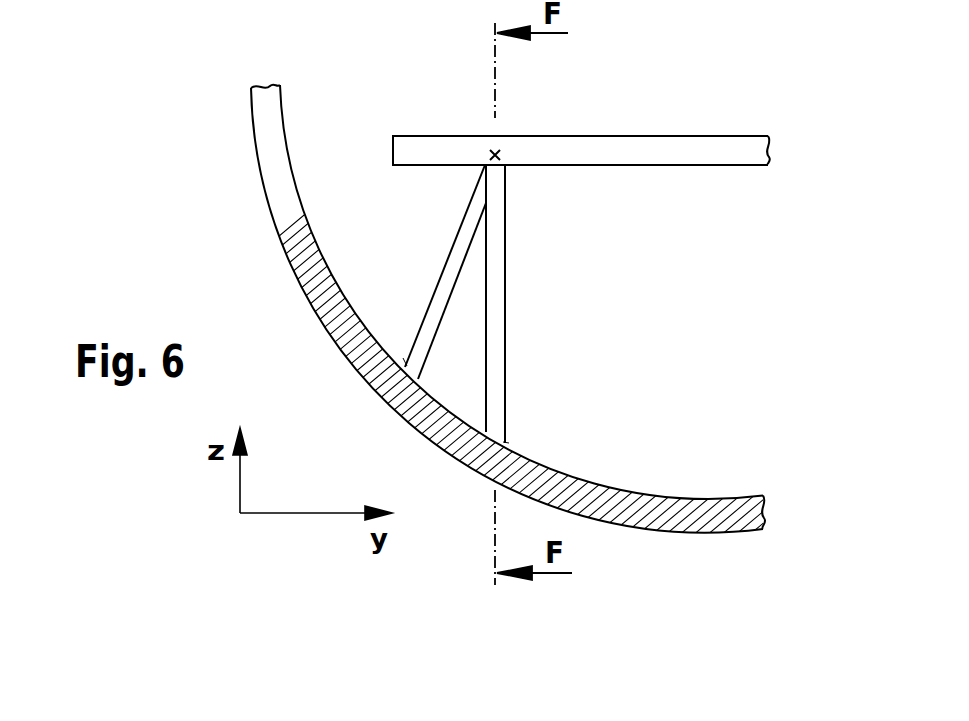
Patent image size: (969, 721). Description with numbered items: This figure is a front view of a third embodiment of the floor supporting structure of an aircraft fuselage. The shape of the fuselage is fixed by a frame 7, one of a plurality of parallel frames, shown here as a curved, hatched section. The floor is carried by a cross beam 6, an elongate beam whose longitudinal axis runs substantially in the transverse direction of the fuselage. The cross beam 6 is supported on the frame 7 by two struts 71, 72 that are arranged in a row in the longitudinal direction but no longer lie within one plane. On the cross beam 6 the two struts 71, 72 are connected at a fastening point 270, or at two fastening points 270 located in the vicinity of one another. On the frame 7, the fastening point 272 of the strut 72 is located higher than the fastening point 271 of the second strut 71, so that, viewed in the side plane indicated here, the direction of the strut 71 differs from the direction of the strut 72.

The cross beam 6 is at (671, 150).
The frame 7 is at (315, 275).
The second strut 71 is at (495, 288).
The strut 72 is at (463, 238).
The fastening point 270 is at (490, 151).
The fastening point of the second strut 271 is at (530, 428).
The fastening point of the strut 272 is at (398, 332).